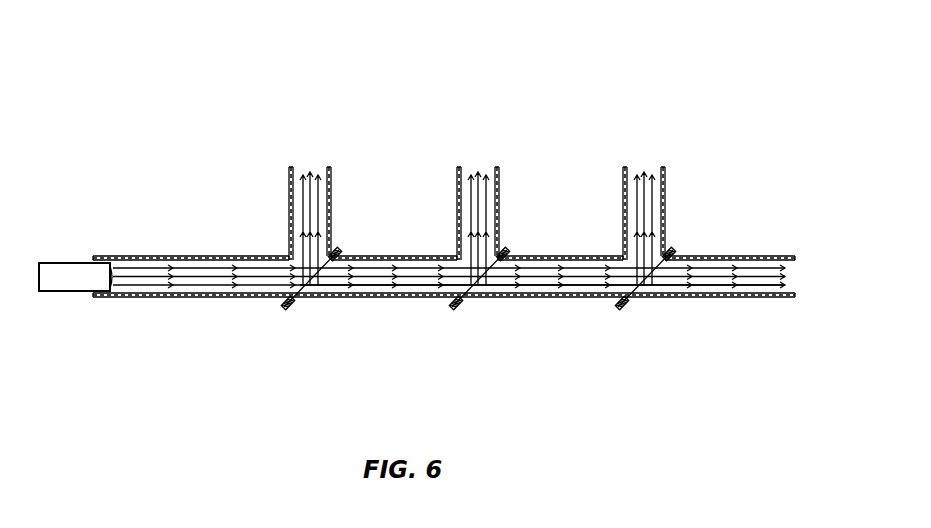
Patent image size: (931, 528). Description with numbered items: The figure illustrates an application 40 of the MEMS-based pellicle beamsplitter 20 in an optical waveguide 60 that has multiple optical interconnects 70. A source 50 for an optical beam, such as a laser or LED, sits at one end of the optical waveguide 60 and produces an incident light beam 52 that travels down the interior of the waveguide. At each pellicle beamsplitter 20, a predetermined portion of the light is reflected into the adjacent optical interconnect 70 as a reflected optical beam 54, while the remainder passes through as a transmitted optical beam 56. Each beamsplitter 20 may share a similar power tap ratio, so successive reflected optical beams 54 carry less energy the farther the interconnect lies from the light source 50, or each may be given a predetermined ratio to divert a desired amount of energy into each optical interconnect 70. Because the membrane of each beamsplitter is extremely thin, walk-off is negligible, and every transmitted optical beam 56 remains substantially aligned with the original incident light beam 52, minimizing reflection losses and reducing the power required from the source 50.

The pellicle beamsplitter 20 is at (291, 308).
The application 40 is at (120, 82).
The source 50 is at (70, 292).
The incident light beam 52 is at (140, 284).
The reflected optical beam 54 is at (316, 193).
The transmitted optical beam 56 is at (329, 283).
The optical waveguide 60 is at (154, 256).
The optical interconnect 70 is at (289, 200).